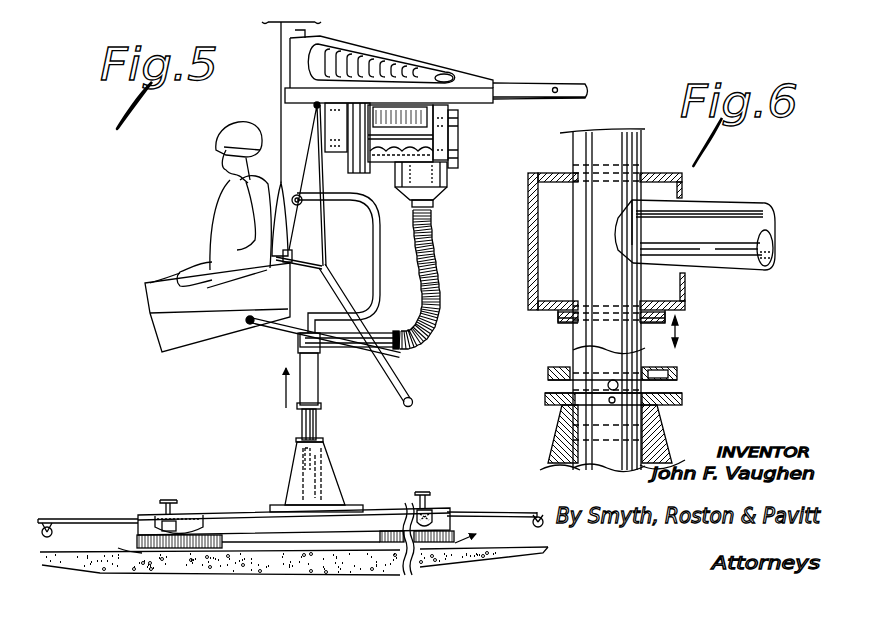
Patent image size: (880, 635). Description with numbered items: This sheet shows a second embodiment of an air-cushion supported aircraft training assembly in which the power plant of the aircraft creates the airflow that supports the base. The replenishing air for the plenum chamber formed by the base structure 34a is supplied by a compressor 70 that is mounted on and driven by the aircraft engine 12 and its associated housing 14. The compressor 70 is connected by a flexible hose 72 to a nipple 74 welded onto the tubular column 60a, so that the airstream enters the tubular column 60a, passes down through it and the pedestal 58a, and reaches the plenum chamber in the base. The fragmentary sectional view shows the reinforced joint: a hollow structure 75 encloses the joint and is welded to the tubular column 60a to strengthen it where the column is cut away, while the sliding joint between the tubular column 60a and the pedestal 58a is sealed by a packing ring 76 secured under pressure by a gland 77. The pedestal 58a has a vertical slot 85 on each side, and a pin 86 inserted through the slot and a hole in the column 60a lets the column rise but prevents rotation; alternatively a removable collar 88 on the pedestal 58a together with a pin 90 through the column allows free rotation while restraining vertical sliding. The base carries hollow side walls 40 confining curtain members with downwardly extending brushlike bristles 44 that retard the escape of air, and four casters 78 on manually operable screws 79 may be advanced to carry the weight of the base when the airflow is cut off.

In FIG. 5, the aircraft engine 12 is at (420, 142).
In FIG. 5, the cover 14 is at (460, 155).
In FIG. 5, the compressor 70 is at (448, 180).
In FIG. 5, the flexible hose 72 is at (436, 282).
In FIG. 5, the nipple 74 is at (378, 330).
In FIG. 6, the nipple 74 is at (743, 198).
In FIG. 5, the hollow structure 75 is at (298, 352).
In FIG. 6, the hollow structure 75 is at (683, 187).
In FIG. 5, the tubular column 60a is at (318, 380).
In FIG. 6, the tubular column 60a is at (575, 346).
In FIG. 5, the vertical slot 85 is at (300, 455).
In FIG. 5, the pin 86 is at (308, 472).
In FIG. 5, the pedestal 58a is at (330, 472).
In FIG. 6, the pedestal 58a is at (560, 440).
In FIG. 5, the base structure 34a is at (377, 506).
In FIG. 5, the manually operable screw 79 is at (165, 497).
In FIG. 5, the caster 78 is at (178, 530).
In FIG. 5, the side wall 40 is at (217, 530).
In FIG. 5, the brushlike bristles 44 is at (207, 550).
In FIG. 6, the removable collar 88 is at (677, 364).
In FIG. 6, the gland 77 is at (672, 380).
In FIG. 6, the pin 90 is at (605, 384).
In FIG. 6, the packing ring 76 is at (660, 430).